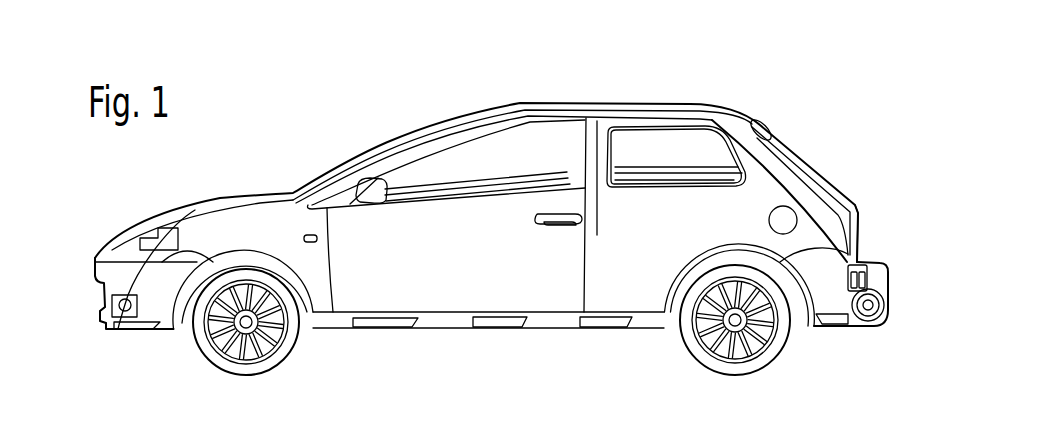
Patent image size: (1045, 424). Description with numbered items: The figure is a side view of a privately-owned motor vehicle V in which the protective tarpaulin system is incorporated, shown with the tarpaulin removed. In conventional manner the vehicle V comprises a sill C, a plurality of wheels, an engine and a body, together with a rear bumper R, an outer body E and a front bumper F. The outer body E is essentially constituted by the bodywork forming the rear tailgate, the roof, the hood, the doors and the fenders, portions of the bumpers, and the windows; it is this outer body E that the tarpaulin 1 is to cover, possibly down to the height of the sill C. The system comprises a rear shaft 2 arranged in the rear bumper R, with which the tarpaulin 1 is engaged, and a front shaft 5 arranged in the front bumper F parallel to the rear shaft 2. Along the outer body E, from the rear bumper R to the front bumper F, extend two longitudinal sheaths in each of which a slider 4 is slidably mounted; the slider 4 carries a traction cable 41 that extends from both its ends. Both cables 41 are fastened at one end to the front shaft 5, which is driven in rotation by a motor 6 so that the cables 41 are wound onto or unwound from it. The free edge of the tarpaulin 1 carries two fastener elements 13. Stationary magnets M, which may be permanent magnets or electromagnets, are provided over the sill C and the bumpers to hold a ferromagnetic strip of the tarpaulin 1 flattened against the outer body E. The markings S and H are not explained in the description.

The tarpaulin 1 is at (873, 265).
The rear shaft 2 is at (885, 298).
The slider 4 is at (861, 262).
The front shaft 5 is at (120, 320).
The motor 6 is at (107, 305).
The fastener element 13 is at (858, 258).
The traction cable 41 is at (270, 197).
The outer body E is at (222, 198).
The front bumper F is at (113, 280).
The rear bumper R is at (873, 280).
The stationary magnets M is at (157, 330).
The sill C is at (438, 323).
The side door S is at (527, 265).
The height line H is at (522, 177).
The vehicle V is at (679, 89).